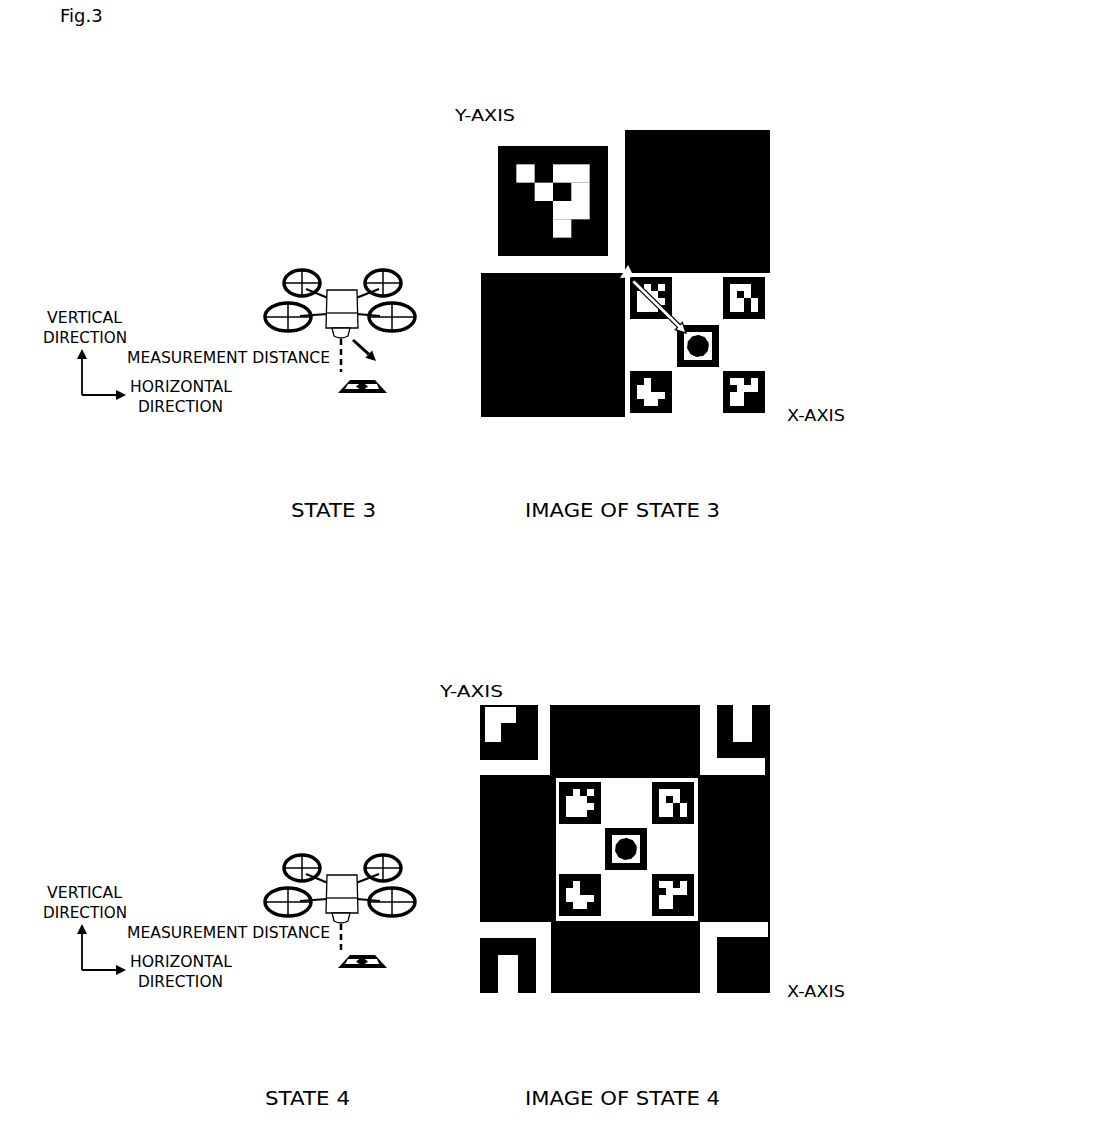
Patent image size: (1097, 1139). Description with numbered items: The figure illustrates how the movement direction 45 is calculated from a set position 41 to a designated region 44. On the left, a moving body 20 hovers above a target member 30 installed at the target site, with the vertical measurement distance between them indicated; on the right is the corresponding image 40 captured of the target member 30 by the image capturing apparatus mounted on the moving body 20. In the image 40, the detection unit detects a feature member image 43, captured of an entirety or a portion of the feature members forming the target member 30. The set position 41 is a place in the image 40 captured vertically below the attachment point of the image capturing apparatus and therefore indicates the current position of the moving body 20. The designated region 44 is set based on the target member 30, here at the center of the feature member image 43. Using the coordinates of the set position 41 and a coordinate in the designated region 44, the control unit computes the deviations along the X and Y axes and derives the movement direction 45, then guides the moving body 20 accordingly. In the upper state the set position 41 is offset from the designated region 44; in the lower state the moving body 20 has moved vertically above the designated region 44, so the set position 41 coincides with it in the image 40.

The moving body 20 is at (342, 288).
The target member 30 is at (361, 396).
The image 40 is at (625, 130).
The set position 41 is at (647, 850).
The feature member image 43 is at (750, 1030).
The designated region 44 is at (718, 347).
The movement direction 45 is at (670, 279).